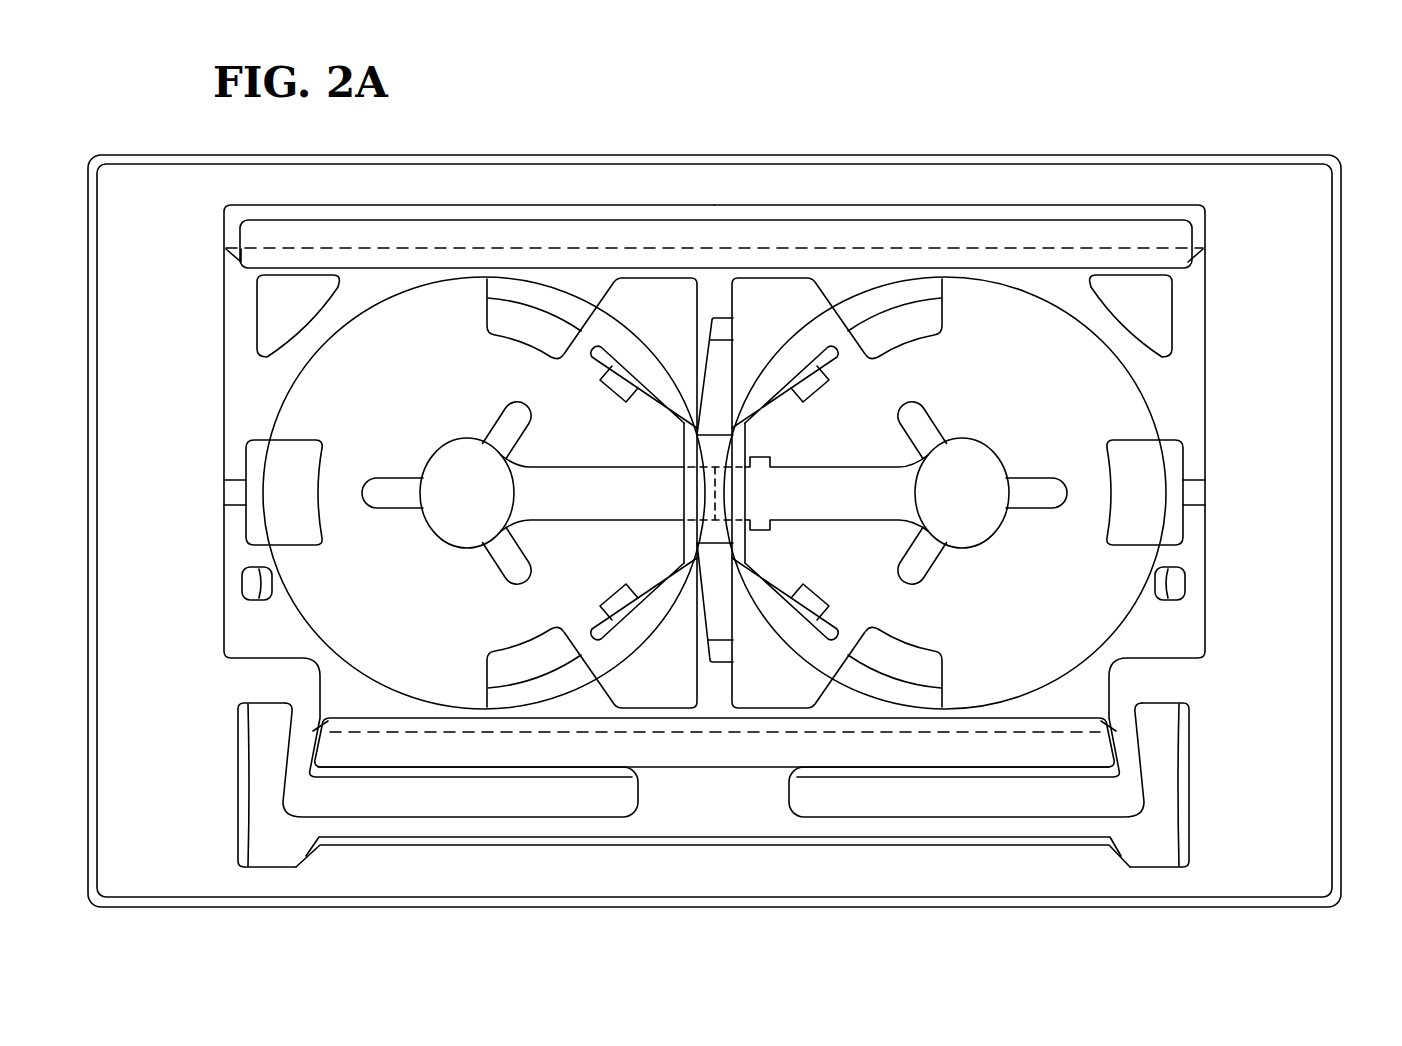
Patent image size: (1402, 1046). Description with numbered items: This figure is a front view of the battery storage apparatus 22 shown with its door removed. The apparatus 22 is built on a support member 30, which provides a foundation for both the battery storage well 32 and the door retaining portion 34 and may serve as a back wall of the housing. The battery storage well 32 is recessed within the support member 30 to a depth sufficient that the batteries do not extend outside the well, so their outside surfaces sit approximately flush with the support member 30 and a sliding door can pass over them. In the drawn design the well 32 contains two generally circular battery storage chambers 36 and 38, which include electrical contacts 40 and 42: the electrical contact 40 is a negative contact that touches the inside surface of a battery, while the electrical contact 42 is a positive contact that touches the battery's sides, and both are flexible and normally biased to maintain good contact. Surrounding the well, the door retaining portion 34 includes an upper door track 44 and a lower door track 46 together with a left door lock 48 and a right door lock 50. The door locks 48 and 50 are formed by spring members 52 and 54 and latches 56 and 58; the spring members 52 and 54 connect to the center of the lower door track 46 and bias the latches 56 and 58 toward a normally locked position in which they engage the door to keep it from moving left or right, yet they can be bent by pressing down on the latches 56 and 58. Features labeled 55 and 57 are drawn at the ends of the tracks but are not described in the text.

The battery storage apparatus 22 is at (1095, 122).
The support member 30 is at (1293, 300).
The battery storage well 32 is at (1162, 396).
The door retaining portion 34 is at (662, 212).
The battery storage chamber 36 is at (1080, 360).
The battery storage chamber 38 is at (306, 412).
The electrical contact 40 is at (968, 462).
The electrical contact 42 is at (774, 408).
The upper door track 44 is at (1172, 235).
The lower door track 46 is at (878, 748).
The left door lock 48 is at (236, 787).
The right door lock 50 is at (1188, 787).
The spring member 52 is at (466, 830).
The spring member 54 is at (983, 830).
The wedge 55 is at (263, 248).
The latch 56 is at (263, 725).
The rail edge 57 is at (708, 727).
The latch 58 is at (1155, 725).